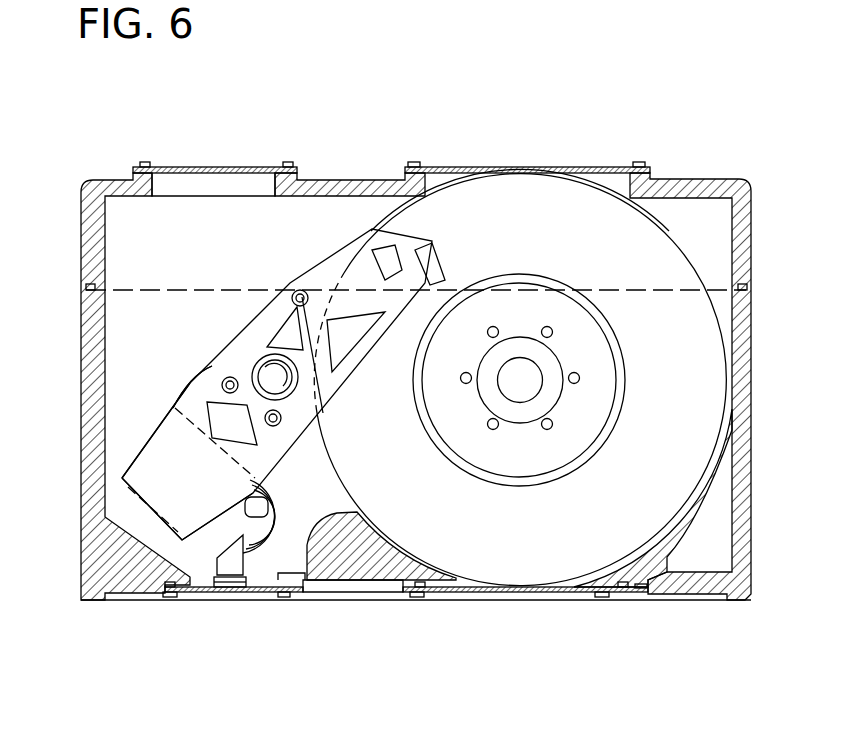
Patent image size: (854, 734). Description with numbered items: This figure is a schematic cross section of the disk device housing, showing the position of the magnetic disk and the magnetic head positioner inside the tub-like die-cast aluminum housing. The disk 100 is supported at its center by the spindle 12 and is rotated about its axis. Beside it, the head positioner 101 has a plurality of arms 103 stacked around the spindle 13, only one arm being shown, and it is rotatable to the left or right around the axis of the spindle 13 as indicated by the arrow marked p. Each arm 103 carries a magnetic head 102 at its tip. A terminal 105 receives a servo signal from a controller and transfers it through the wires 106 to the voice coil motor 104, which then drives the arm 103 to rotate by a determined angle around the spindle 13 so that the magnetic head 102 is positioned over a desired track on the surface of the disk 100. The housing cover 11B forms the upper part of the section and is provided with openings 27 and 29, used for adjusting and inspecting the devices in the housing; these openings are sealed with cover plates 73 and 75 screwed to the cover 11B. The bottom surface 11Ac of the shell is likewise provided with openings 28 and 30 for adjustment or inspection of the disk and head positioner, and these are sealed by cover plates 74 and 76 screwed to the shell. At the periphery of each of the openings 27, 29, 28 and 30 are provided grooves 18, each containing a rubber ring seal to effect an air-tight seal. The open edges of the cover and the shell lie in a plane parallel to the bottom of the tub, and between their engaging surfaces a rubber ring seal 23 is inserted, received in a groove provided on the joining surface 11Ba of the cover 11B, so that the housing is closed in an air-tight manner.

The housing cover 11B is at (687, 179).
The joining surface 11Ba is at (383, 180).
The bottom surface of the shell 11Ac is at (695, 590).
The spindle 12 is at (520, 401).
The spindle 13 is at (243, 363).
The grooves 18 is at (145, 172).
The ring seal 23 is at (84, 288).
The opening 27 is at (455, 177).
The opening 28 is at (468, 596).
The opening 29 is at (155, 187).
The opening 30 is at (267, 582).
The cover plate 73 is at (577, 165).
The cover plate 74 is at (572, 596).
The cover plate 75 is at (227, 166).
The cover plate 76 is at (210, 590).
The disk 100 is at (640, 235).
The head positioner 101 is at (150, 426).
The magnetic head 102 is at (440, 268).
The arm 103 is at (328, 262).
The voice coil motor 104 is at (147, 477).
The terminal 105 is at (233, 593).
The wires 106 is at (260, 562).